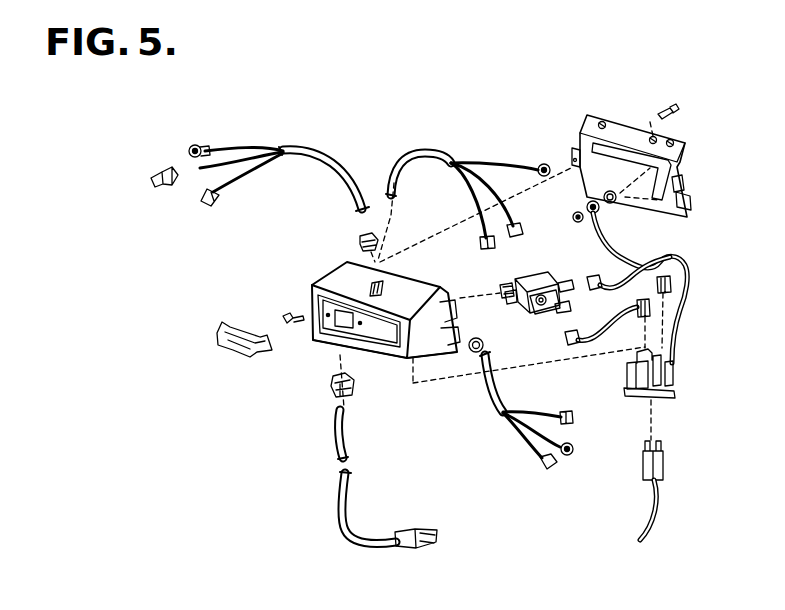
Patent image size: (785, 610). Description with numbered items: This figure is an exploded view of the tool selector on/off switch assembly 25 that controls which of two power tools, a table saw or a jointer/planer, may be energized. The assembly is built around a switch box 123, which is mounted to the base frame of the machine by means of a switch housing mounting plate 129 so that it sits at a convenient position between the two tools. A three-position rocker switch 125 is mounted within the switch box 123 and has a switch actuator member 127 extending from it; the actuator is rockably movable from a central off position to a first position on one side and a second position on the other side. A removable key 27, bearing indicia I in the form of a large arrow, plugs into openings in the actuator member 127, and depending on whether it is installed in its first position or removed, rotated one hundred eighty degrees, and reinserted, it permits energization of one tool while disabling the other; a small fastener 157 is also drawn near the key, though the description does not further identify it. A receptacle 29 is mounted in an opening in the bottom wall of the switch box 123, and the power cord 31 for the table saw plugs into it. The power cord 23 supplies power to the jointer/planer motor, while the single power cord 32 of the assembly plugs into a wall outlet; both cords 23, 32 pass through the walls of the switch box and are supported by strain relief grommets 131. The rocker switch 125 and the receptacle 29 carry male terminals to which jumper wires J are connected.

The power cord 23 is at (322, 152).
The switch assembly power cord 32 is at (420, 157).
The switch housing mounting plate 129 is at (602, 113).
The jumper wires J is at (685, 305).
The receptacle 29 is at (665, 395).
The power cord 31 is at (662, 521).
The tool selector-on/off switch assembly 25 is at (289, 290).
The switch box 123 is at (381, 356).
The strain relief grommets 131 is at (360, 237).
The screw 157 is at (283, 318).
The indicia I is at (215, 325).
The removable key 27 is at (228, 358).
The rocker switch 125 is at (513, 271).
The switch actuator member 127 is at (514, 303).